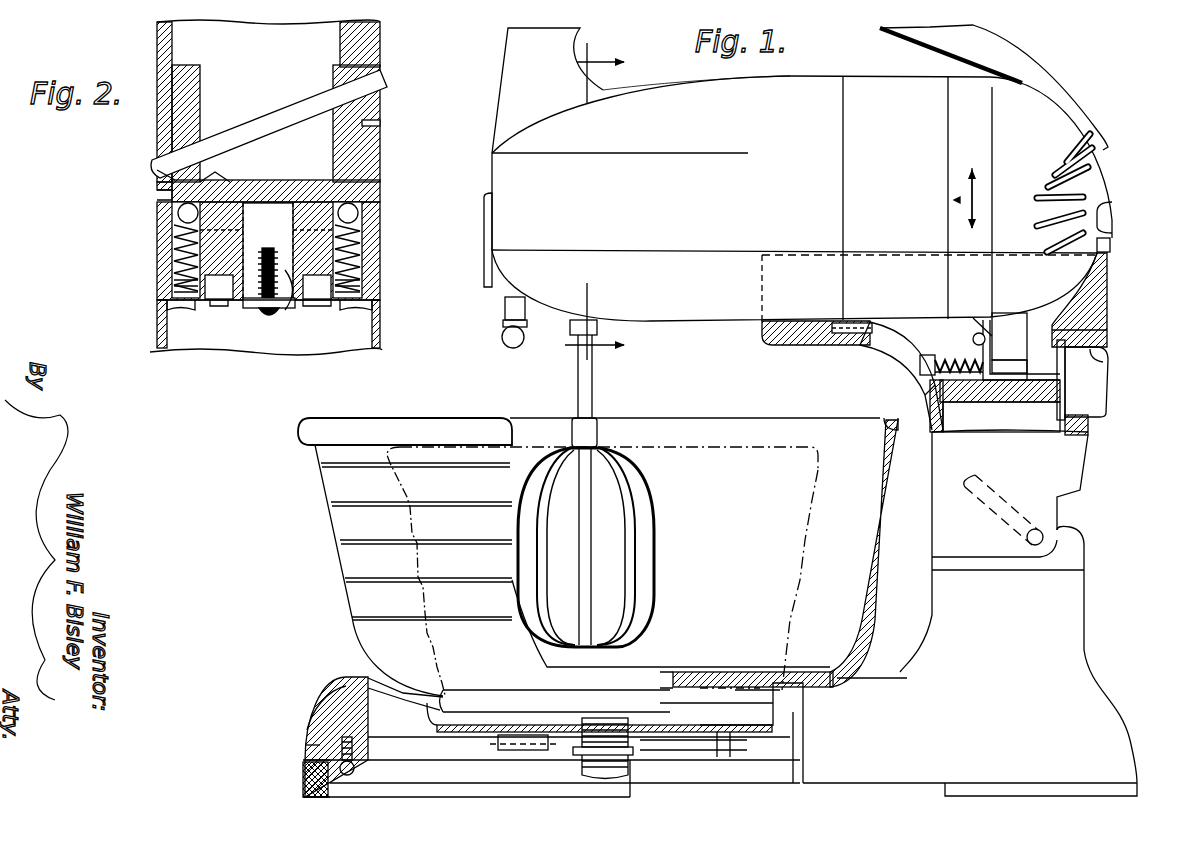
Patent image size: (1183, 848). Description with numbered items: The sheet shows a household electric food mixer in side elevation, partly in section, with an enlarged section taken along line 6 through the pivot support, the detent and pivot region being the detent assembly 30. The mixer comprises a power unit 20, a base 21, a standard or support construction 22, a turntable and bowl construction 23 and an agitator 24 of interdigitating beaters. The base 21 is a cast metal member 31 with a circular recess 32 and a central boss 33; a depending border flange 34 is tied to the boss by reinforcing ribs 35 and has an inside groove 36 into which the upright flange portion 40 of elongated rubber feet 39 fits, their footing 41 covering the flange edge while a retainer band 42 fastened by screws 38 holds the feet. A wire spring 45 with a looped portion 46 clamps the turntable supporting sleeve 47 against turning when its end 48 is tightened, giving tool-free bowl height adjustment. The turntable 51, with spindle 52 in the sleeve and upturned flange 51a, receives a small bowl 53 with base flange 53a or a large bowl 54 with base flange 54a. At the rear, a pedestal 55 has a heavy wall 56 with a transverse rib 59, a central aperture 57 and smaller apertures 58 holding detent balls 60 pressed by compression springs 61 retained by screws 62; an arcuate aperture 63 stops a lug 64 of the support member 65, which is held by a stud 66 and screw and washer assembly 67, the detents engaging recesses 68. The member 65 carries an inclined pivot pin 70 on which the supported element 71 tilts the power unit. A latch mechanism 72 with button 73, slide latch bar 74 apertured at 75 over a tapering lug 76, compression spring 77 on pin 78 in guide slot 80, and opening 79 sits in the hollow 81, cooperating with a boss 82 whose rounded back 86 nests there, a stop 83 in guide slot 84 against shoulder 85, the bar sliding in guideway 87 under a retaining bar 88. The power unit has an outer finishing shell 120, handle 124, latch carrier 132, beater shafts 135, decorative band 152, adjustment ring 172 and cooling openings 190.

In FIG. 1, the section line 6- 6 is at (589, 199).
In FIG. 1, the power unit 20 is at (740, 324).
In FIG. 1, the base 21 is at (1088, 583).
In FIG. 2, the standard or support construction 22 is at (150, 50).
In FIG. 1, the standard or support construction 22 is at (1092, 427).
In FIG. 1, the turntable and bowl construction 23 is at (337, 562).
In FIG. 1, the agitator 24 is at (662, 522).
In FIG. 2, the detent assembly 30 is at (386, 267).
In FIG. 1, the cast metal member 31 is at (333, 682).
In FIG. 1, the circular recess 32 is at (803, 703).
In FIG. 1, the boss 33 is at (660, 755).
In FIG. 1, the depending border flange 34 is at (318, 712).
In FIG. 1, the reinforcing ribs 35 is at (806, 731).
In FIG. 1, the right angle groove 36 is at (303, 770).
In FIG. 1, the screws 38 is at (356, 745).
In FIG. 1, the rubber feet 39 is at (1142, 789).
In FIG. 2, the upright flange portion 40 is at (384, 142).
In FIG. 1, the upright flange portion 40 is at (302, 772).
In FIG. 1, the footing 41 is at (356, 790).
In FIG. 1, the retainer band 42 is at (314, 748).
In FIG. 1, the wire spring 45 is at (525, 752).
In FIG. 1, the intermediate looped portion 46 is at (610, 718).
In FIG. 1, the turntable supporting sleeve 47 is at (582, 770).
In FIG. 1, the spring end 48 is at (718, 756).
In FIG. 1, the turntable 51 is at (690, 680).
In FIG. 1, the upturned flange 51a is at (800, 692).
In FIG. 1, the spindle 52 is at (578, 718).
In FIG. 1, the small bowl 53 is at (810, 532).
In FIG. 1, the base flange of small bowl 53a is at (732, 658).
In FIG. 1, the large bowl 54 is at (876, 575).
In FIG. 1, the base flange of large bowl 54a is at (748, 678).
In FIG. 2, the pedestal 55 is at (382, 322).
In FIG. 1, the pedestal 55 is at (1063, 645).
In FIG. 2, the heavy wall 56 is at (178, 216).
In FIG. 2, the central aperture 57 is at (290, 292).
In FIG. 2, the smaller apertures 58 is at (372, 242).
In FIG. 2, the transverse rib 59 is at (360, 226).
In FIG. 2, the detent balls 60 is at (352, 208).
In FIG. 2, the compression springs 61 is at (325, 235).
In FIG. 2, the screws 62 is at (366, 282).
In FIG. 2, the arcuate aperture 63 is at (258, 205).
In FIG. 2, the lug 64 is at (190, 182).
In FIG. 1, the support member 65 is at (1072, 548).
In FIG. 2, the stud 66 is at (248, 287).
In FIG. 2, the screw and washer assembly 67 is at (264, 312).
In FIG. 2, the recesses 68 is at (157, 199).
In FIG. 2, the pivot pin 70 is at (150, 165).
In FIG. 1, the pivot pin 70 is at (1045, 532).
In FIG. 2, the supported element 71 is at (380, 50).
In FIG. 1, the supported element 71 is at (1068, 478).
In FIG. 1, the latch mechanism 72 is at (1112, 346).
In FIG. 1, the button 73 is at (1097, 384).
In FIG. 1, the slide latch bar 74 is at (1018, 402).
In FIG. 1, the aperture 75 is at (1003, 312).
In FIG. 1, the tapering lug 76 is at (973, 339).
In FIG. 1, the compression spring 77 is at (940, 372).
In FIG. 1, the pin 78 is at (948, 385).
In FIG. 1, the opening 79 is at (1102, 362).
In FIG. 1, the guide slot 80 is at (920, 366).
In FIG. 1, the hollow portion 81 is at (1085, 332).
In FIG. 1, the boss 82 is at (1012, 320).
In FIG. 1, the stop 83 is at (846, 338).
In FIG. 1, the guide slot 84 is at (890, 344).
In FIG. 1, the shoulder 85 is at (852, 320).
In FIG. 1, the rounded back 86 is at (1107, 275).
In FIG. 1, the guideway 87 is at (966, 404).
In FIG. 1, the retaining bar 88 is at (1012, 375).
In FIG. 1, the outer finishing shell 120 is at (681, 89).
In FIG. 1, the handle 124 is at (1017, 56).
In FIG. 1, the power attachment latch carrier 132 is at (500, 314).
In FIG. 1, the beater shafts 135 is at (594, 392).
In FIG. 1, the decorative plastic band 152 is at (870, 88).
In FIG. 1, the adjustment ring 172 is at (960, 92).
In FIG. 1, the openings 190 is at (1088, 184).